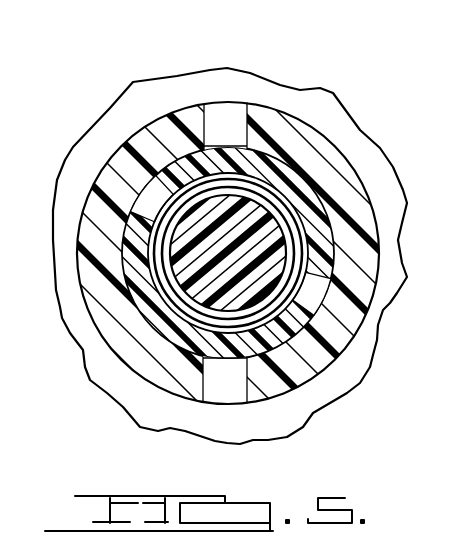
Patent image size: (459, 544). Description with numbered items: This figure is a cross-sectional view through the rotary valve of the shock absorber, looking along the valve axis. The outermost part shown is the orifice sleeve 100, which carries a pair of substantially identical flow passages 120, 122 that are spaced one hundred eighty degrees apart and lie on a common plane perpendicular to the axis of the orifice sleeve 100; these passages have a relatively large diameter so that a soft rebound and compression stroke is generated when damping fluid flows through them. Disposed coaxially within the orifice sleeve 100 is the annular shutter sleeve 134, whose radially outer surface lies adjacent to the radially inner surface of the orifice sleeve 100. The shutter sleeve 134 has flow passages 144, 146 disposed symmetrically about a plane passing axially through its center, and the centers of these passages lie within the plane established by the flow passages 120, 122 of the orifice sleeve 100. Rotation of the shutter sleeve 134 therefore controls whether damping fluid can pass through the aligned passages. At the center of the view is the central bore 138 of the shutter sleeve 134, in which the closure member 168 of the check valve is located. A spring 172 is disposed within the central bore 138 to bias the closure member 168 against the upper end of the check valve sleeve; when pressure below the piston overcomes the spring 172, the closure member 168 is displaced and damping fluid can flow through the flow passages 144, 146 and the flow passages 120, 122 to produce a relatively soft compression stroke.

The orifice sleeve 100 is at (115, 330).
The flow passage 120 is at (228, 392).
The flow passage 122 is at (227, 121).
The shutter sleeve 134 is at (130, 260).
The central bore 138 is at (265, 190).
The flow passage 144 is at (300, 298).
The flow passage 146 is at (150, 195).
The closure member 168 is at (190, 290).
The spring 172 is at (287, 250).